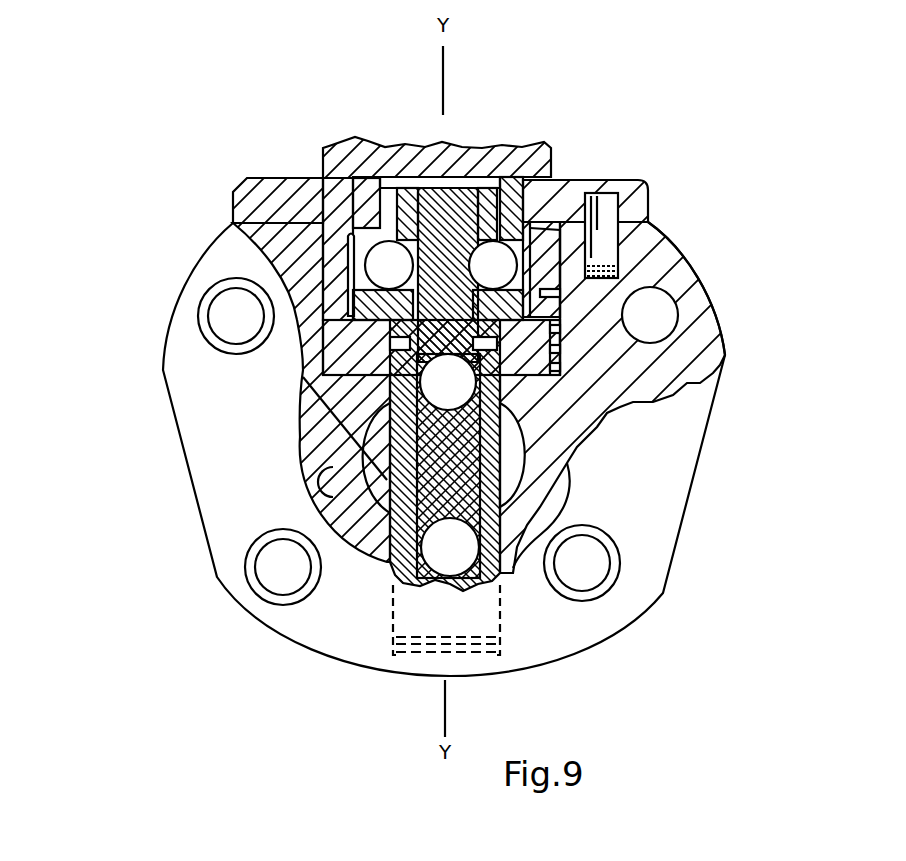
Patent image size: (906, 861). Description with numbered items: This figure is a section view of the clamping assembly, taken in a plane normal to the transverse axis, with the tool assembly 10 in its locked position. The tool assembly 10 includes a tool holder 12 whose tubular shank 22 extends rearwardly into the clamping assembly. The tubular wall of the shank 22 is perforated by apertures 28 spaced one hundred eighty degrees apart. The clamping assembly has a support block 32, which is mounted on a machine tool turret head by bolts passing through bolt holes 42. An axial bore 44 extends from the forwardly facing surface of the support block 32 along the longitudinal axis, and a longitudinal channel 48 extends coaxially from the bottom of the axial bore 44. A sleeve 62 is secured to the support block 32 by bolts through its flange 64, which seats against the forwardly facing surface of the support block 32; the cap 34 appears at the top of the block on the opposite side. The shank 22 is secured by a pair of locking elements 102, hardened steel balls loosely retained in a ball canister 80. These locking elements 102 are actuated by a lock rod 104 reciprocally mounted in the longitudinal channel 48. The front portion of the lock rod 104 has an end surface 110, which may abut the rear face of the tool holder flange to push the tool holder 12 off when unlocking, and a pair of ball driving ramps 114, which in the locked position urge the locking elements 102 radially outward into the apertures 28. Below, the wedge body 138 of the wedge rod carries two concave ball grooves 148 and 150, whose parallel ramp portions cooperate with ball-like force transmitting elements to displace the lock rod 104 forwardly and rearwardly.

The tool assembly 10 is at (182, 617).
The tool holder 12 is at (319, 148).
The tubular shank 22 is at (363, 307).
The apertures 28 is at (367, 240).
The support block 32 is at (705, 441).
The cap 34 is at (647, 203).
The bolt holes 42 is at (590, 594).
The axial bore 44 is at (553, 288).
The longitudinal channel 48 is at (437, 655).
The sleeve 62 is at (563, 257).
The flange 64 is at (247, 179).
The ball canister 80 is at (550, 157).
The locking elements 102 is at (560, 373).
The lock rod 104 is at (323, 377).
The end surface 110 is at (436, 190).
The ball driving ramps 114 is at (385, 230).
The wedge body 138 is at (447, 478).
The ball groove 148 is at (330, 500).
The ball groove 150 is at (390, 501).